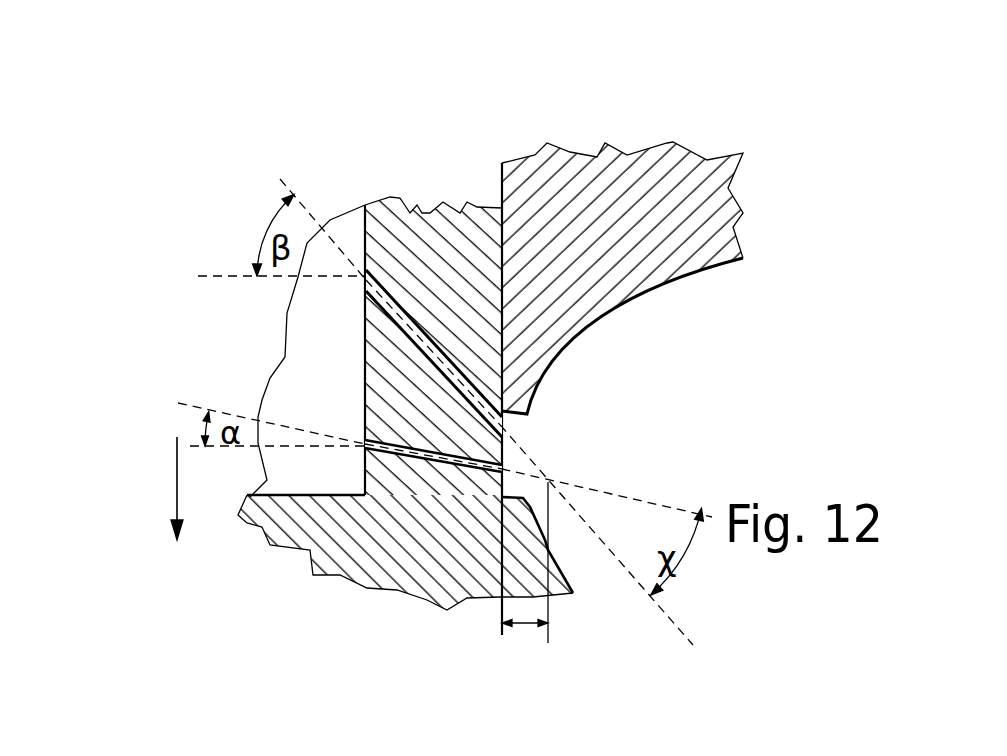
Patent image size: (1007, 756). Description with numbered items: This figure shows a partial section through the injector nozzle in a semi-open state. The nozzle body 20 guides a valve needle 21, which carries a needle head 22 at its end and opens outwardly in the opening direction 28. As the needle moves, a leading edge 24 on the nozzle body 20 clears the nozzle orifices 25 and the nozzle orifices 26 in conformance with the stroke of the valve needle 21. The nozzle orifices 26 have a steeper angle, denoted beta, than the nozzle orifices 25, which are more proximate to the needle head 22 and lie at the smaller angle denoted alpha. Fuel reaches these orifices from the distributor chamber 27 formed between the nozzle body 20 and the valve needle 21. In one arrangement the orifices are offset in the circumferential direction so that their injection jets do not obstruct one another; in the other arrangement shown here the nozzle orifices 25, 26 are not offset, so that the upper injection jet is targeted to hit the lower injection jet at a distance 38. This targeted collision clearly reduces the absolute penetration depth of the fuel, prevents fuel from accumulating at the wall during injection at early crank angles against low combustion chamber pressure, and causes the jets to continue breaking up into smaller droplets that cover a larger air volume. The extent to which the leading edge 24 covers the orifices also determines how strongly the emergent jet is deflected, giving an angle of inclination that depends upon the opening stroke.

The nozzle body 20 is at (648, 208).
The valve needle 21 is at (442, 248).
The needle head 22 is at (447, 540).
The leading edge 24 is at (532, 398).
The nozzle orifices 25 is at (367, 425).
The nozzle orifices 26 is at (412, 318).
The distributor chamber 27 is at (322, 387).
The opening direction 28 is at (175, 487).
The distance 38 is at (527, 625).